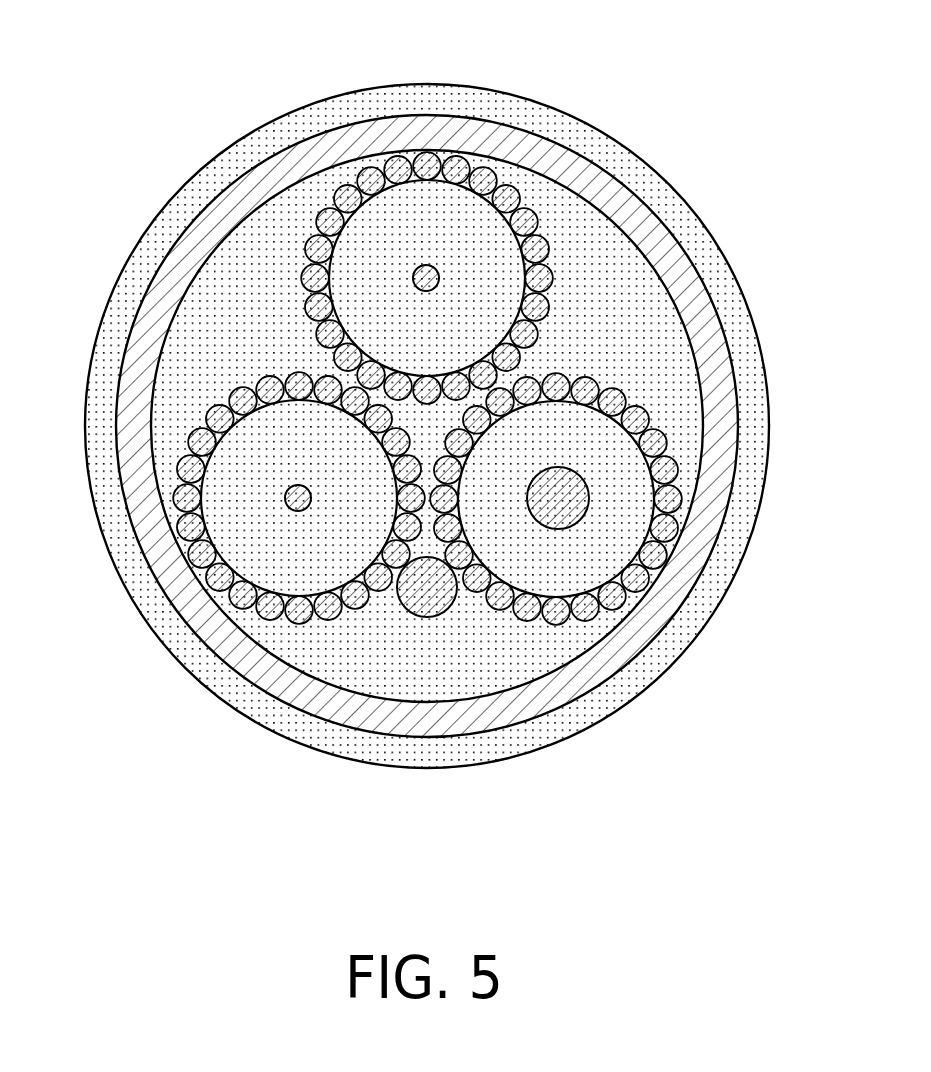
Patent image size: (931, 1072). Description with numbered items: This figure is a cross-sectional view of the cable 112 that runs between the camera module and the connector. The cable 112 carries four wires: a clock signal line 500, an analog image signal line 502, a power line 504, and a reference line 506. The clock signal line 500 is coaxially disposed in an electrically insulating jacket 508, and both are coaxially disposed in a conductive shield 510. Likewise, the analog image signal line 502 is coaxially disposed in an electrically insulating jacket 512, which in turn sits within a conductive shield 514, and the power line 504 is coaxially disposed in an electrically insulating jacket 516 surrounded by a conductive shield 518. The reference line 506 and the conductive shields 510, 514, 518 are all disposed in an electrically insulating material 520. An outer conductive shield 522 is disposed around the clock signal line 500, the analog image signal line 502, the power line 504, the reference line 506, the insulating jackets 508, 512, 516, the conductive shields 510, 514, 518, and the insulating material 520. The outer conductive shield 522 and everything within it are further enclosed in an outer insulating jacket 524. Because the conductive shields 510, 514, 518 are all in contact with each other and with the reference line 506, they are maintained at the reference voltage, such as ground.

The cable 112 is at (84, 82).
The clock signal line 500 is at (302, 494).
The analog image signal line 502 is at (436, 273).
The power line 504 is at (557, 468).
The reference line 506 is at (425, 613).
The electrically insulating jacket 508 is at (273, 433).
The conductive shield 510 is at (295, 387).
The electrically insulating jacket 512 is at (347, 288).
The conductive shield 514 is at (545, 308).
The electrically insulating jacket 516 is at (533, 577).
The conductive shield 518 is at (620, 394).
The electrically insulating material 520 is at (438, 675).
The outer conductive shield 522 is at (692, 300).
The outer insulating jacket 524 is at (708, 242).